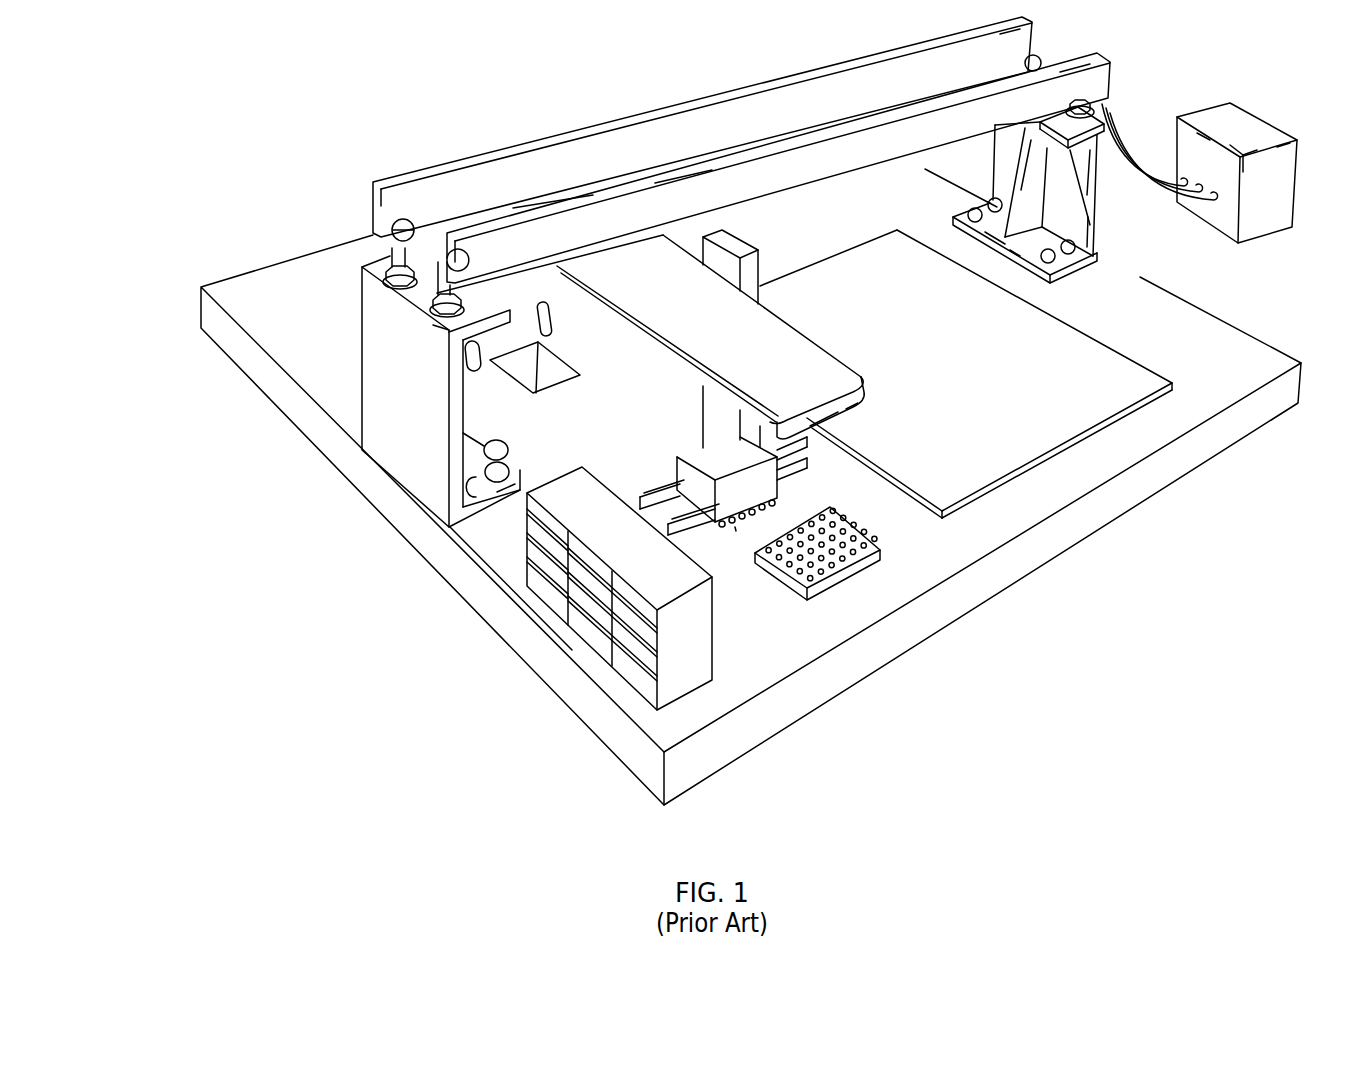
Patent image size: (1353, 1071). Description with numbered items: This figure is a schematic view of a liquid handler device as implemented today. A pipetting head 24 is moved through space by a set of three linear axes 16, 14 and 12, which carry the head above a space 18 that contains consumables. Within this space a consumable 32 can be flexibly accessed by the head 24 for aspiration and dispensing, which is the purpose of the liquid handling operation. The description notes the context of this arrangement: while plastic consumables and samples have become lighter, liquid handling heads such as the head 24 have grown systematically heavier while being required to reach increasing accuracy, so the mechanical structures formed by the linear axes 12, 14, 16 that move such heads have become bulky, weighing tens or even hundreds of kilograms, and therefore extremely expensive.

The linear axis 12 is at (456, 160).
The linear axis 14 is at (672, 242).
The linear axis 16 is at (722, 238).
The space containing consumables 18 is at (262, 282).
The pipetting head 24 is at (700, 461).
The consumable 32 is at (840, 572).